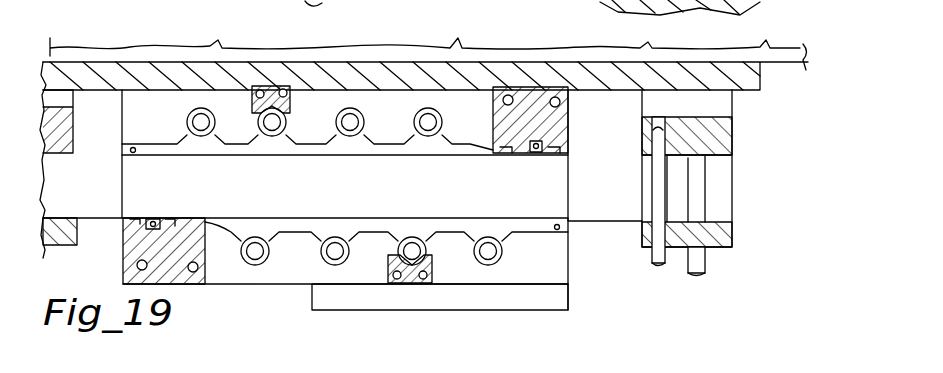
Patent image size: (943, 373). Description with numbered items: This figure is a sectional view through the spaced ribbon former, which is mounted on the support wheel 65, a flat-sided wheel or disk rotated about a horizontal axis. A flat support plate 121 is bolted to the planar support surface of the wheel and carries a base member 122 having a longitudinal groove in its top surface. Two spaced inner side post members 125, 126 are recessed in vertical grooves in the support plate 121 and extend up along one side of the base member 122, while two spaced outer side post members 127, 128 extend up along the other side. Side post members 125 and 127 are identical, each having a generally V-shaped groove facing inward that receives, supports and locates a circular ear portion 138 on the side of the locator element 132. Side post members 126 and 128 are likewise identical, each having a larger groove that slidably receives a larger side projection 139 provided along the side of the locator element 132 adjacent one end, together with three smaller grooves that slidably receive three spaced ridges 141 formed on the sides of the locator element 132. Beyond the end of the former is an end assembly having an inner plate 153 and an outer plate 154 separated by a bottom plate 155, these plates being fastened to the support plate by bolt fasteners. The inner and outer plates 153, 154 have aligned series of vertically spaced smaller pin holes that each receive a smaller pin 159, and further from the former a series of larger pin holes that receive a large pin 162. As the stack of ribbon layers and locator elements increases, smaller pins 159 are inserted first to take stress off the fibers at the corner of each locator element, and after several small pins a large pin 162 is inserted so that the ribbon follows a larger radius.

The support wheel 65 is at (740, 52).
The support plate 121 is at (752, 88).
The base member 122 is at (331, 12).
The inner side post member 125 is at (263, 86).
The inner side post member 126 is at (521, 92).
The outer side post member 127 is at (432, 277).
The outer side post member 128 is at (130, 247).
The locator element 132 is at (162, 143).
The circular ear portion 138 is at (288, 120).
The larger side projection 139 is at (567, 125).
The spaced ridges 141 is at (500, 158).
The inner plate 153 is at (725, 147).
The outer plate 154 is at (730, 235).
The bottom plate 155 is at (727, 188).
The smaller pin 159 is at (660, 260).
The large pin 162 is at (700, 262).